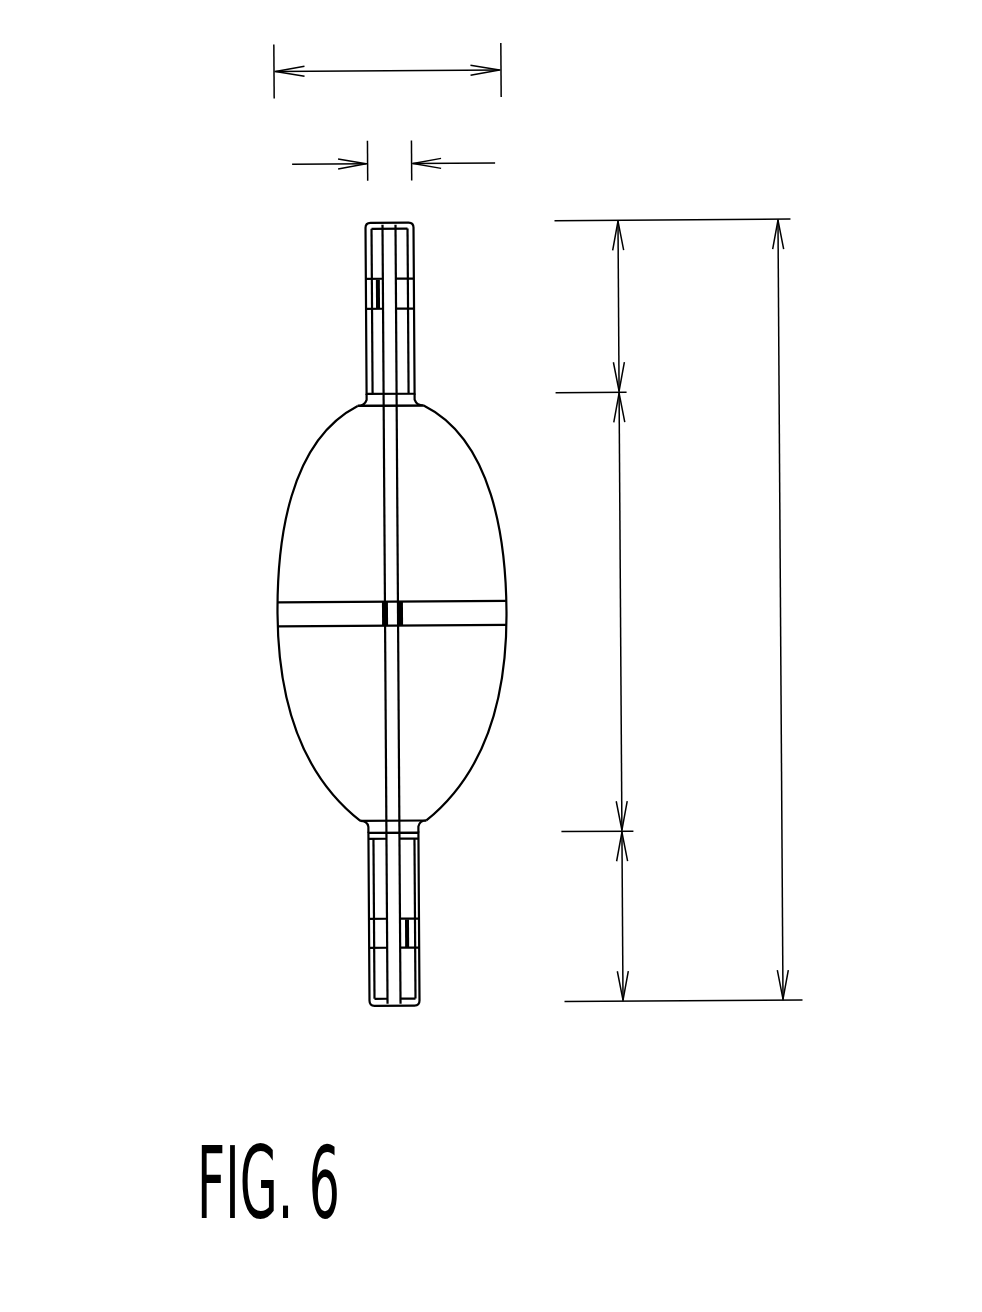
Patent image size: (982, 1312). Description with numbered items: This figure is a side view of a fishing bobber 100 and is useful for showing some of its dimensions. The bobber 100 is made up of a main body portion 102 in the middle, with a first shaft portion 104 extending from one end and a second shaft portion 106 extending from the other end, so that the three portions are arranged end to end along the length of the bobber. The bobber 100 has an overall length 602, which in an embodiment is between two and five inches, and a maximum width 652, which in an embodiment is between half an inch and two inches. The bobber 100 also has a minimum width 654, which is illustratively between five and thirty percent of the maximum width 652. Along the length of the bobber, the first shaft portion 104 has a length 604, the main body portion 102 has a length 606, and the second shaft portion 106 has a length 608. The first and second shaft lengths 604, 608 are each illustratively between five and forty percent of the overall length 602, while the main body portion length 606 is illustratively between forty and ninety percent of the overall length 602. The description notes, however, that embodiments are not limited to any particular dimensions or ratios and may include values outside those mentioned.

The bobber 100 is at (277, 615).
The main body portion 102 is at (293, 614).
The first shaft portion 104 is at (274, 309).
The second shaft portion 106 is at (282, 920).
The overall length 602 is at (780, 612).
The first shaft portion length 604 is at (620, 307).
The main body portion length 606 is at (620, 612).
The second shaft portion length 608 is at (620, 918).
The maximum width 652 is at (394, 49).
The minimum width 654 is at (431, 146).